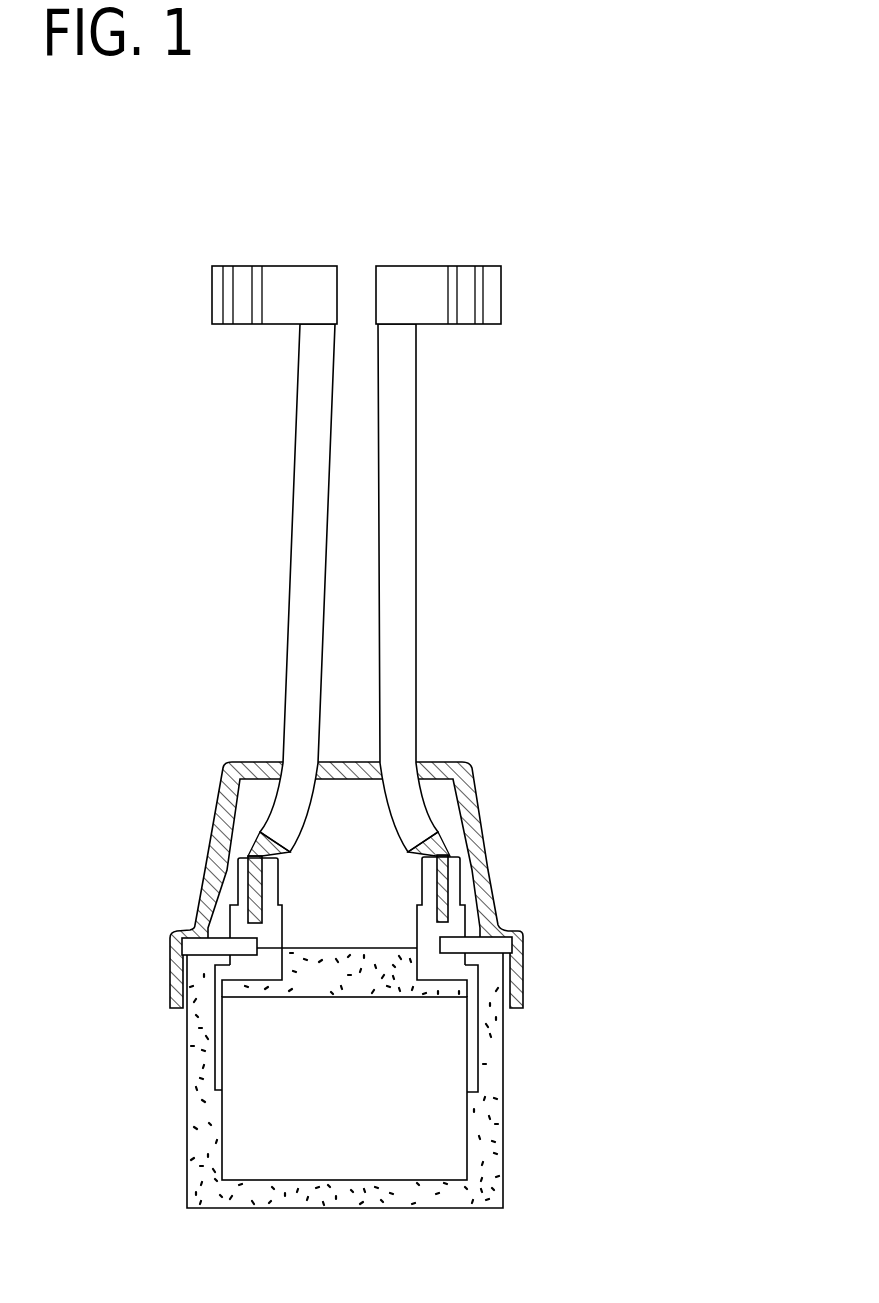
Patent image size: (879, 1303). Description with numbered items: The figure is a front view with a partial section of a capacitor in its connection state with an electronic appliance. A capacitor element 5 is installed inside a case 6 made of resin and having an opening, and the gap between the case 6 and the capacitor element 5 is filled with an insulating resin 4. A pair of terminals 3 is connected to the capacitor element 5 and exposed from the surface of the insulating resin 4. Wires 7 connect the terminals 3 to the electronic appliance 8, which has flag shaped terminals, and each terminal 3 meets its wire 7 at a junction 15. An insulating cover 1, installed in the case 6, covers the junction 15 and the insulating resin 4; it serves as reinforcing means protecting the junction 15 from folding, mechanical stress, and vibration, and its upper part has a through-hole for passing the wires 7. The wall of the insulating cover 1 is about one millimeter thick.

The insulating cover 1 is at (475, 767).
The terminals 3 is at (272, 927).
The insulating resin 4 is at (493, 1043).
The capacitor element 5 is at (257, 1123).
The case 6 is at (503, 1110).
The wires 7 is at (308, 492).
The electronic appliance 8 is at (315, 282).
The junction 15 is at (440, 878).